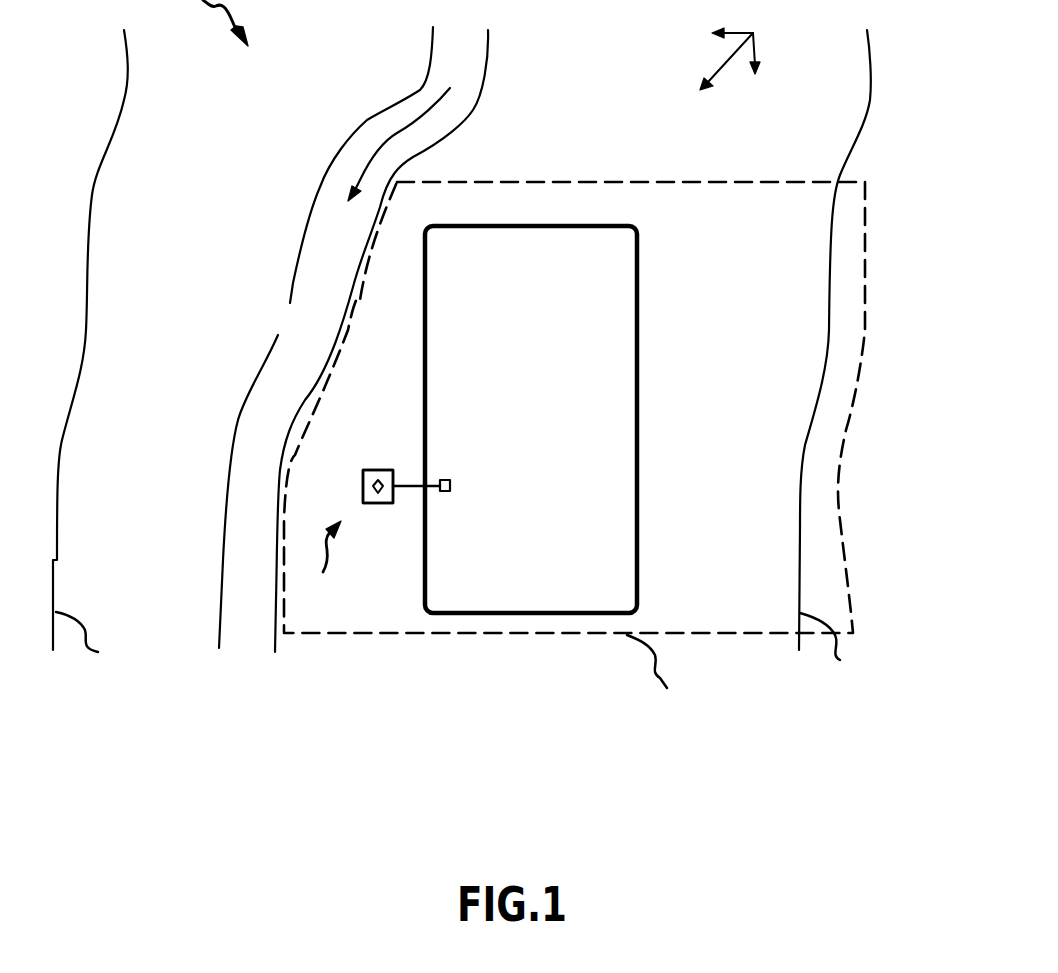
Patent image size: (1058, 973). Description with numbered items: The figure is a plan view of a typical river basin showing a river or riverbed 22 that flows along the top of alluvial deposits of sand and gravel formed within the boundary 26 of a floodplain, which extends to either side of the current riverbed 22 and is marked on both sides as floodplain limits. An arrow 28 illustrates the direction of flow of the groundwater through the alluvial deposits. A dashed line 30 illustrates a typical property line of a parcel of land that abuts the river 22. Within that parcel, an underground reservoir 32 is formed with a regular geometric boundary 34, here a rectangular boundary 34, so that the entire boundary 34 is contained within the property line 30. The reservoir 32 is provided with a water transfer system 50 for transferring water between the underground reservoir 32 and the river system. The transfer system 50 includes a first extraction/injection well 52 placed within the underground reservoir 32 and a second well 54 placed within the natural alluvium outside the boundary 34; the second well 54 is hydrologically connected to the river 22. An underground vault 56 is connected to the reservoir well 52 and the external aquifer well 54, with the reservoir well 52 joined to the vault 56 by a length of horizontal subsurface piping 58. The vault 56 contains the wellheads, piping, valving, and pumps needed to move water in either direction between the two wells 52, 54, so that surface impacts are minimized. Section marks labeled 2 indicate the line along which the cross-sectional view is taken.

The section line of FIG. 2 is at (252, 487).
The riverbed 22 is at (250, 404).
The boundary of a floodplain 26 is at (113, 140).
The arrow 28 is at (722, 72).
The dashed line 30 is at (318, 636).
The underground reservoir 32 is at (545, 388).
The regular geometric boundary 34 is at (640, 338).
The water transfer system 50 is at (325, 563).
The extraction/injection well 52 is at (450, 487).
The well 54 is at (383, 470).
The underground vault 56 is at (372, 504).
The horizontal subsurface piping 58 is at (402, 487).